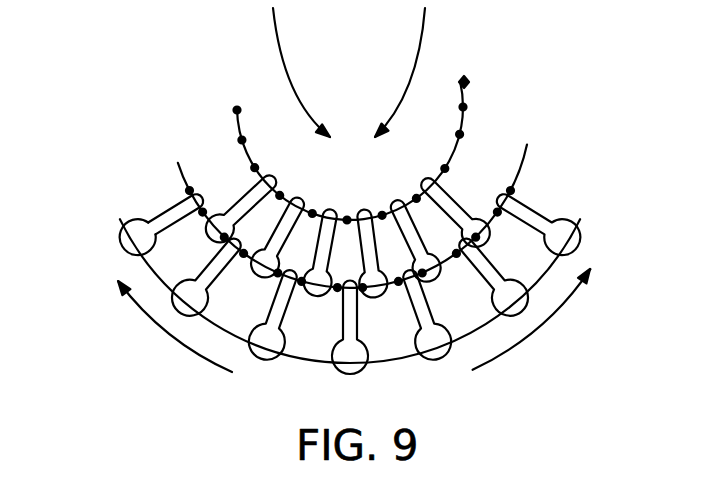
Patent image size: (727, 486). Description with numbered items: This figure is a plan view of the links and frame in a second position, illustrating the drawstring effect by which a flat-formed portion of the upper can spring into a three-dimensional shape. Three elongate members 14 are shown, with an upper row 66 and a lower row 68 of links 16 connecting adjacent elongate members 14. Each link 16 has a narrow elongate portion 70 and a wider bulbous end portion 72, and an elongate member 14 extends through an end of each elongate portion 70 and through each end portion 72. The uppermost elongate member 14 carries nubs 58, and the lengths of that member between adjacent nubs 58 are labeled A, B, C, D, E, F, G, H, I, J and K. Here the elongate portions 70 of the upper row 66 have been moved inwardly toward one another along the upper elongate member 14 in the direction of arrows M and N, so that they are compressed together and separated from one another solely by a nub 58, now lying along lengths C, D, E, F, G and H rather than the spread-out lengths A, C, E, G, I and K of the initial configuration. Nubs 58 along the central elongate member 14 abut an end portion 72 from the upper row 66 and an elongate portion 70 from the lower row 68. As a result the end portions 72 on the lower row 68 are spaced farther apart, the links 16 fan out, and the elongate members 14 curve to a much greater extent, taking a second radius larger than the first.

The elongate member 14 is at (235, 110).
The link 16 is at (452, 200).
The nub 58 is at (397, 295).
The upper row 66 is at (228, 191).
The lower row 68 is at (537, 203).
The elongate portion 70 is at (178, 213).
The bulbous end portion 72 is at (128, 236).
The length A is at (241, 130).
The length B is at (254, 156).
The length C is at (266, 180).
The length D is at (302, 200).
The length E is at (339, 205).
The length F is at (362, 203).
The length G is at (392, 193).
The length H is at (422, 164).
The length I is at (440, 145).
The length J is at (458, 100).
The length K is at (463, 76).
The arrow M is at (301, 72).
The arrow N is at (400, 72).